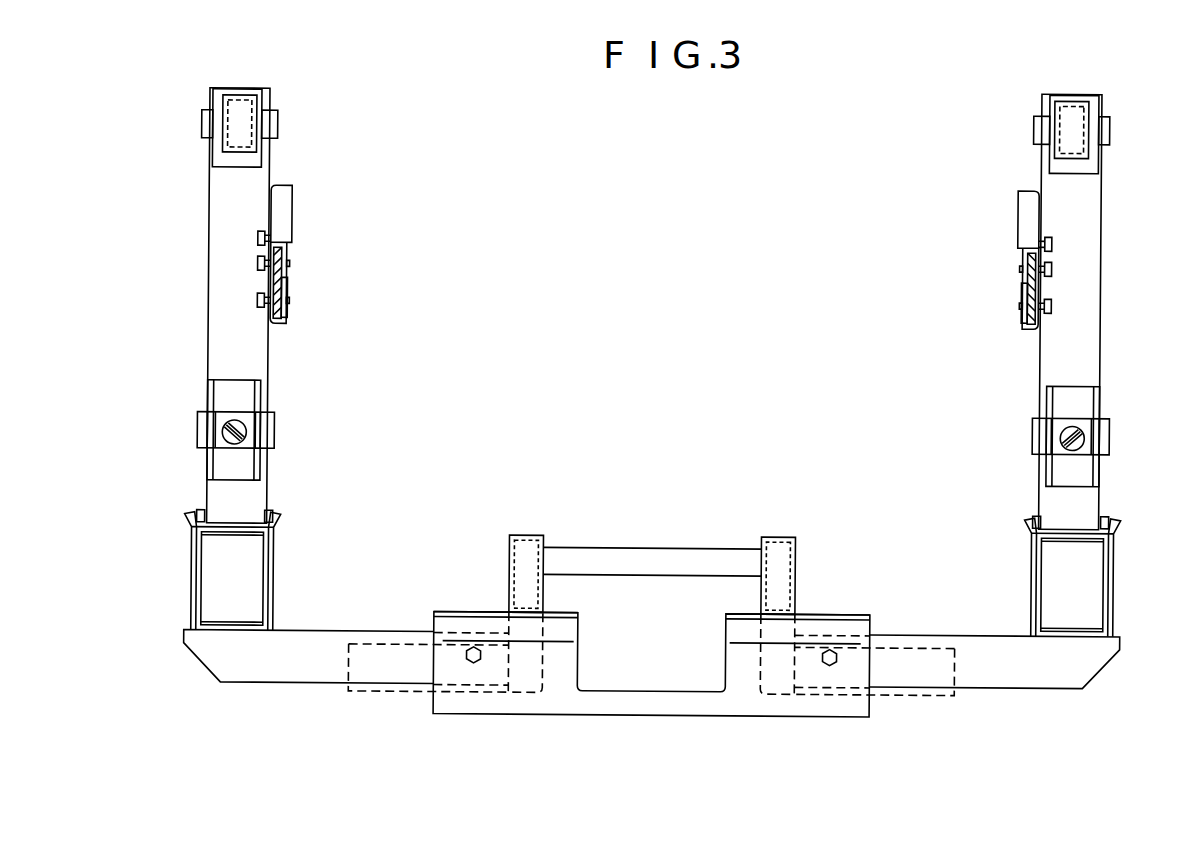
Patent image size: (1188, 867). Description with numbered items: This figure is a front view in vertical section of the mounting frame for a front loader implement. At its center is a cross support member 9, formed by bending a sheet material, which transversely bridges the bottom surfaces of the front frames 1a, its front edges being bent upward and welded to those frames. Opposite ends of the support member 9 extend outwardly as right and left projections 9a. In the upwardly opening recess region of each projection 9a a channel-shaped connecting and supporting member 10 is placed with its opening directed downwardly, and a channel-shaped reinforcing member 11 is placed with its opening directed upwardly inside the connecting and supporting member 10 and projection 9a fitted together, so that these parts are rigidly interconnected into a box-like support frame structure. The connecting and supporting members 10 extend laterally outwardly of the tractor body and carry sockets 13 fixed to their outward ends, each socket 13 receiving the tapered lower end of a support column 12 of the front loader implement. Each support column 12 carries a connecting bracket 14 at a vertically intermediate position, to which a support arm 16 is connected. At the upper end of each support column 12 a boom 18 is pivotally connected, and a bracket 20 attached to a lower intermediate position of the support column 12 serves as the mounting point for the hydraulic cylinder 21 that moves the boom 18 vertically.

The front frame 1a is at (530, 532).
The cross support member 9 is at (663, 686).
The projection 9a is at (458, 606).
The connecting and supporting member 10 is at (322, 628).
The reinforcing member 11 is at (393, 690).
The support column 12 is at (209, 251).
The socket 13 is at (193, 570).
The connecting bracket 14 is at (292, 316).
The support arm 16 is at (290, 278).
The boom 18 is at (240, 91).
The bracket 20 is at (209, 395).
The hydraulic cylinder 21 is at (248, 434).